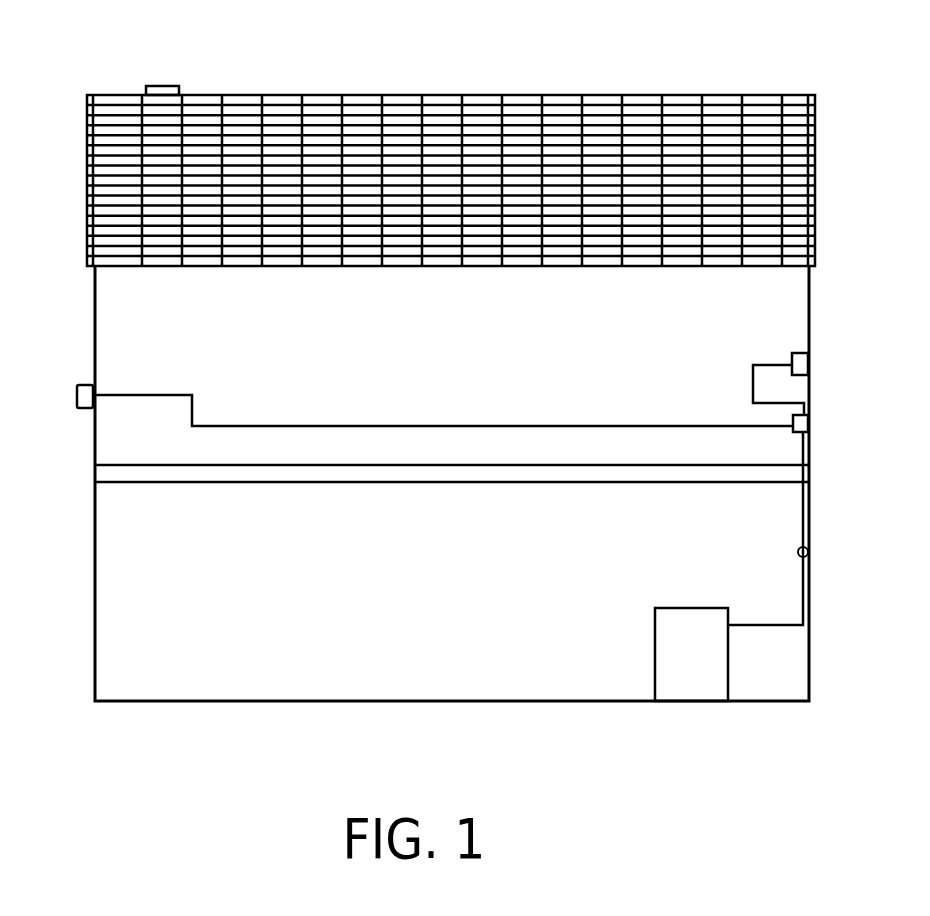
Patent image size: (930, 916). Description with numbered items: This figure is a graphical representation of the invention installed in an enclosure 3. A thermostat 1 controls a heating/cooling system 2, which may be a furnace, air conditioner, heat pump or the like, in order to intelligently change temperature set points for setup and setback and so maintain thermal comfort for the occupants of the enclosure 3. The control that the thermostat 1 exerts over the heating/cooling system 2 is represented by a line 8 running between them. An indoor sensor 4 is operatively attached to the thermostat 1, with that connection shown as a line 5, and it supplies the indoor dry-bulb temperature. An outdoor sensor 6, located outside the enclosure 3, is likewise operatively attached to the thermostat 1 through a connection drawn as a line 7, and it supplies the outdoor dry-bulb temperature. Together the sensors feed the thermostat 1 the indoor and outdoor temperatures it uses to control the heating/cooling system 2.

The thermostat 1 is at (809, 423).
The heating/cooling system 2 is at (697, 675).
The enclosure 3 is at (568, 86).
The indoor sensor 4 is at (809, 362).
The line 5 is at (752, 378).
The outdoor sensor 6 is at (77, 393).
The line 7 is at (441, 425).
The line 8 is at (809, 556).